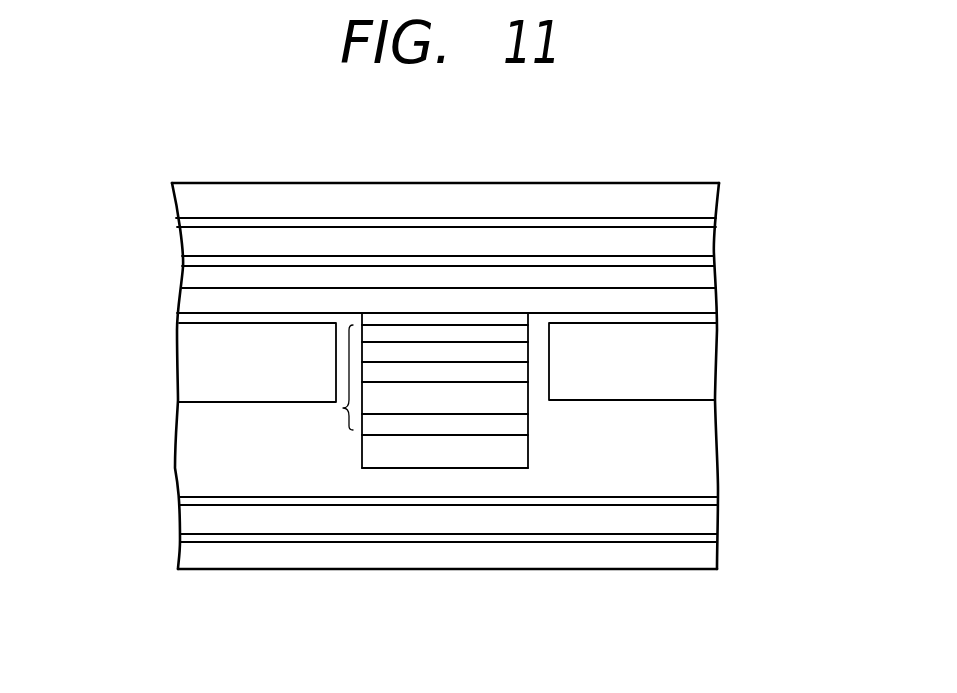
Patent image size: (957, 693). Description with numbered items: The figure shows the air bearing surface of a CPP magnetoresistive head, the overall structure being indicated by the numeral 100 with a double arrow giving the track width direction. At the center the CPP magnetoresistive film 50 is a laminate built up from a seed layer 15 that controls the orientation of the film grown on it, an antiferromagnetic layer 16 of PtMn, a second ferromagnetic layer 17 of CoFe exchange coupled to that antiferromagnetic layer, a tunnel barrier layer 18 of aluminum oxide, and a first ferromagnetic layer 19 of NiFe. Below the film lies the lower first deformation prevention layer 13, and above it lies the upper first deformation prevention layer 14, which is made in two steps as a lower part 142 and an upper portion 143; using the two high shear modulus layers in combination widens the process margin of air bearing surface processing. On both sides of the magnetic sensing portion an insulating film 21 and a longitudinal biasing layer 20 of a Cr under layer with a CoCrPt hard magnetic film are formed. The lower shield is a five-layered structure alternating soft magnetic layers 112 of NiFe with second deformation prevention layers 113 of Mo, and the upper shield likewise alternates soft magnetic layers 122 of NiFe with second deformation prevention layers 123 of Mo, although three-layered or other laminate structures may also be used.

The air bearing surface 100 is at (833, 635).
The soft magnetic layers 122 is at (192, 204).
The second deformation prevention layers 123 is at (713, 223).
The soft magnetic layers 112 is at (192, 557).
The second deformation prevention layers 113 is at (717, 501).
The insulating film 21 is at (183, 313).
The longitudinal biasing layer 20 is at (183, 363).
The CPP magnetoresistive film 50 is at (342, 410).
The tunnel barrier layer 18 is at (388, 350).
The first ferromagnetic layer 19 is at (433, 332).
The upper first deformation prevention layer 14 is at (449, 209).
The lower part of the upper first deformation prevention layer 142 is at (473, 315).
The upper portion of the upper first deformation prevention layer 143 is at (525, 298).
The second ferromagnetic layer 17 is at (493, 372).
The antiferromagnetic layer 16 is at (455, 405).
The seed layer 15 is at (417, 425).
The lower first deformation prevention layer 13 is at (381, 452).